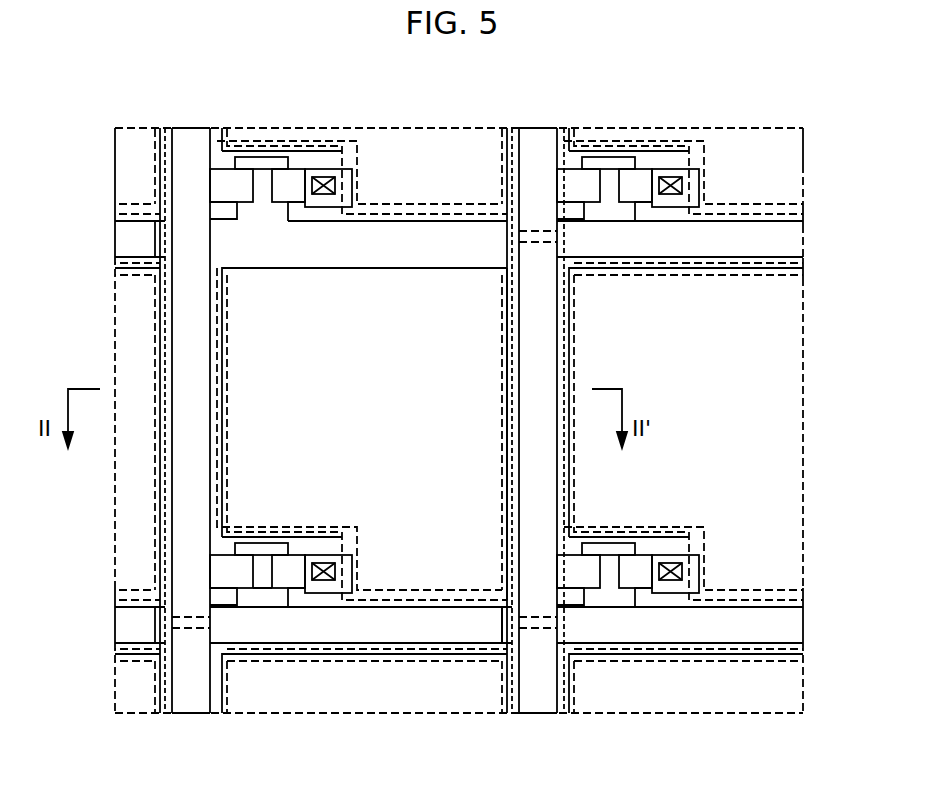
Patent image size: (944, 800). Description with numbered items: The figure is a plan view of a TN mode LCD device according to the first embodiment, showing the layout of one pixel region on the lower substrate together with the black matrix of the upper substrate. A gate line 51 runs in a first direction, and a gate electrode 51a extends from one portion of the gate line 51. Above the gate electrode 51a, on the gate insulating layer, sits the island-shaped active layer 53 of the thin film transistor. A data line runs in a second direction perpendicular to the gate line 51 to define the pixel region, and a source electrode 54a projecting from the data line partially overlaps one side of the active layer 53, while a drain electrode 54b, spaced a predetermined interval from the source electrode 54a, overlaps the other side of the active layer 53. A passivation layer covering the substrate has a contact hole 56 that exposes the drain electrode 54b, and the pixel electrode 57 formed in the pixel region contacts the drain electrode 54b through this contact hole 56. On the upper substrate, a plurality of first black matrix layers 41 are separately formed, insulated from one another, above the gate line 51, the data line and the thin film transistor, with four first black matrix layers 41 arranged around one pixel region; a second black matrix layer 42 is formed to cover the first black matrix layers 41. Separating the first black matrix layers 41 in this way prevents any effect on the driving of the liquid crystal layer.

The first black matrix layers 41 is at (217, 360).
The second black matrix layer 42 is at (228, 323).
The gate line 51 is at (400, 607).
The gate electrode 51a is at (258, 543).
The active layer 53 is at (263, 598).
The source electrode 54a is at (235, 573).
The drain electrode 54b is at (295, 558).
The contact hole 56 is at (325, 580).
The pixel electrode 57 is at (228, 406).